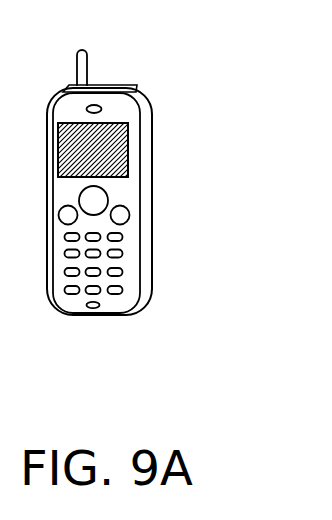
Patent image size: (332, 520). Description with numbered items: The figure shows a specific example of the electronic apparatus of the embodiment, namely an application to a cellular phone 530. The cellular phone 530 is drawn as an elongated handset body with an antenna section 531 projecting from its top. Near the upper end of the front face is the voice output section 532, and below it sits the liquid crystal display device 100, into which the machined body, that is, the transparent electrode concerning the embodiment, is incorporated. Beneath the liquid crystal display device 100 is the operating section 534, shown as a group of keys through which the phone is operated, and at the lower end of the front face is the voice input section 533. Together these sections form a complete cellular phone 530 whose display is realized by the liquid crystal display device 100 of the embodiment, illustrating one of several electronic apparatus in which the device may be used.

The cellular phone 530 is at (187, 102).
The antenna section 531 is at (89, 54).
The voice output section 532 is at (100, 105).
The liquid crystal display device 100 is at (128, 146).
The voice input section 533 is at (100, 303).
The operating section 534 is at (158, 178).